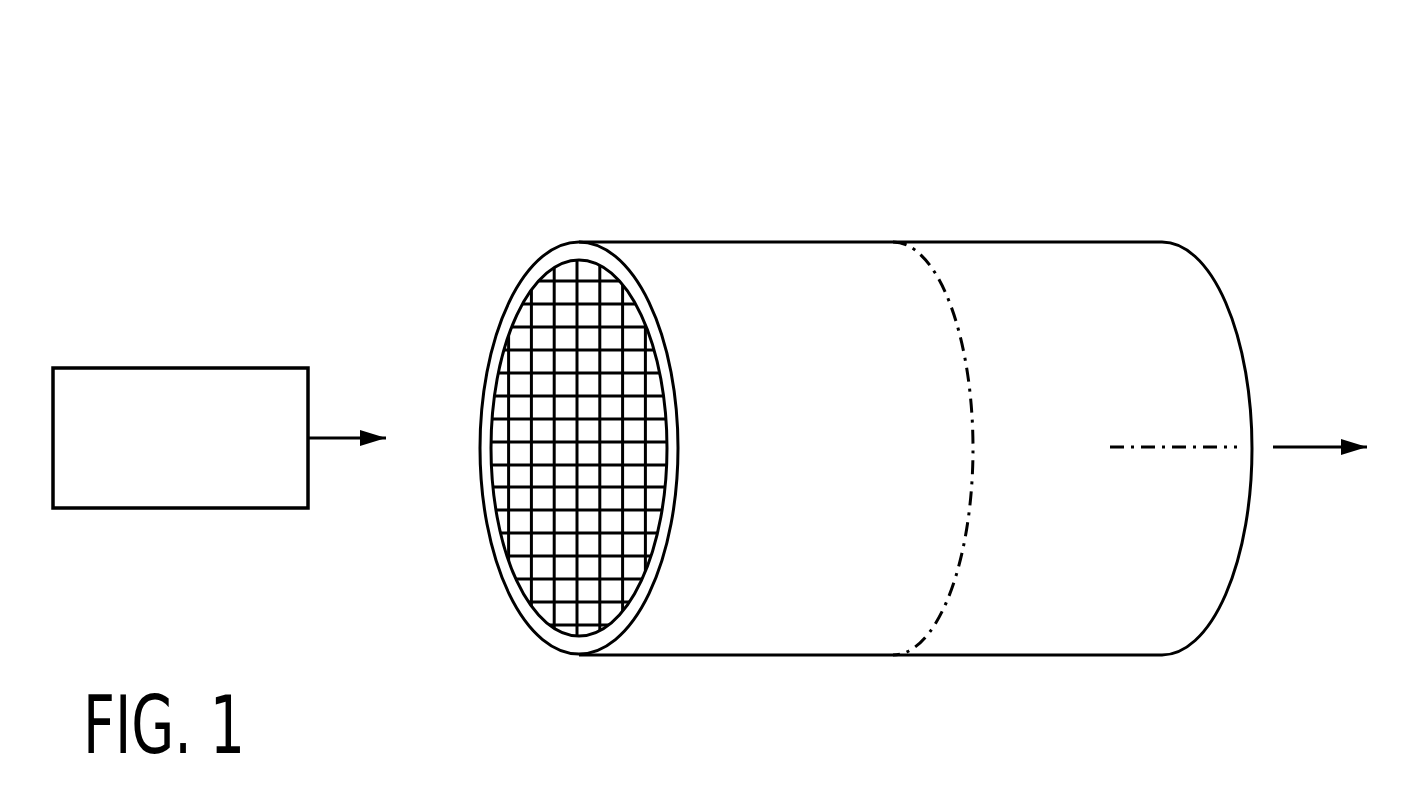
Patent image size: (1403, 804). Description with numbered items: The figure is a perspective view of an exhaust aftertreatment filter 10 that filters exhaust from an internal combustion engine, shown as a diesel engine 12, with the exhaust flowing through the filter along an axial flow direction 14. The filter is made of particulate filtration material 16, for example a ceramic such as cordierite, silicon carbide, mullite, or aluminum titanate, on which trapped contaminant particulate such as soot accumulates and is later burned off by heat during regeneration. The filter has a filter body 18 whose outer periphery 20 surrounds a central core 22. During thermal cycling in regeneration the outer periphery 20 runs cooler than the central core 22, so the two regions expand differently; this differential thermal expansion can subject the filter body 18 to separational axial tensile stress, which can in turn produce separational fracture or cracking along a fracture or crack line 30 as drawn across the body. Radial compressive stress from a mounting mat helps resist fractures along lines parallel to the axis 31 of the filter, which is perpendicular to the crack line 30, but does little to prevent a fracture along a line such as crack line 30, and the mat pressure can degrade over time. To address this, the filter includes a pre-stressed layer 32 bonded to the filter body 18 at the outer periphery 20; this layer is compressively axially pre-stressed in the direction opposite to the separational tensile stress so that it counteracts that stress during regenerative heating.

The exhaust aftertreatment filter 10 is at (752, 128).
The diesel engine 12 is at (215, 368).
The axial flow direction 14 is at (358, 438).
The particulate filtration material 16 is at (584, 479).
The filter body 18 is at (533, 513).
The outer periphery 20 is at (532, 300).
The central core 22 is at (610, 420).
The fracture or crack line 30 is at (968, 367).
The axis 31 is at (1205, 447).
The pre-stressed layer 32 is at (570, 248).